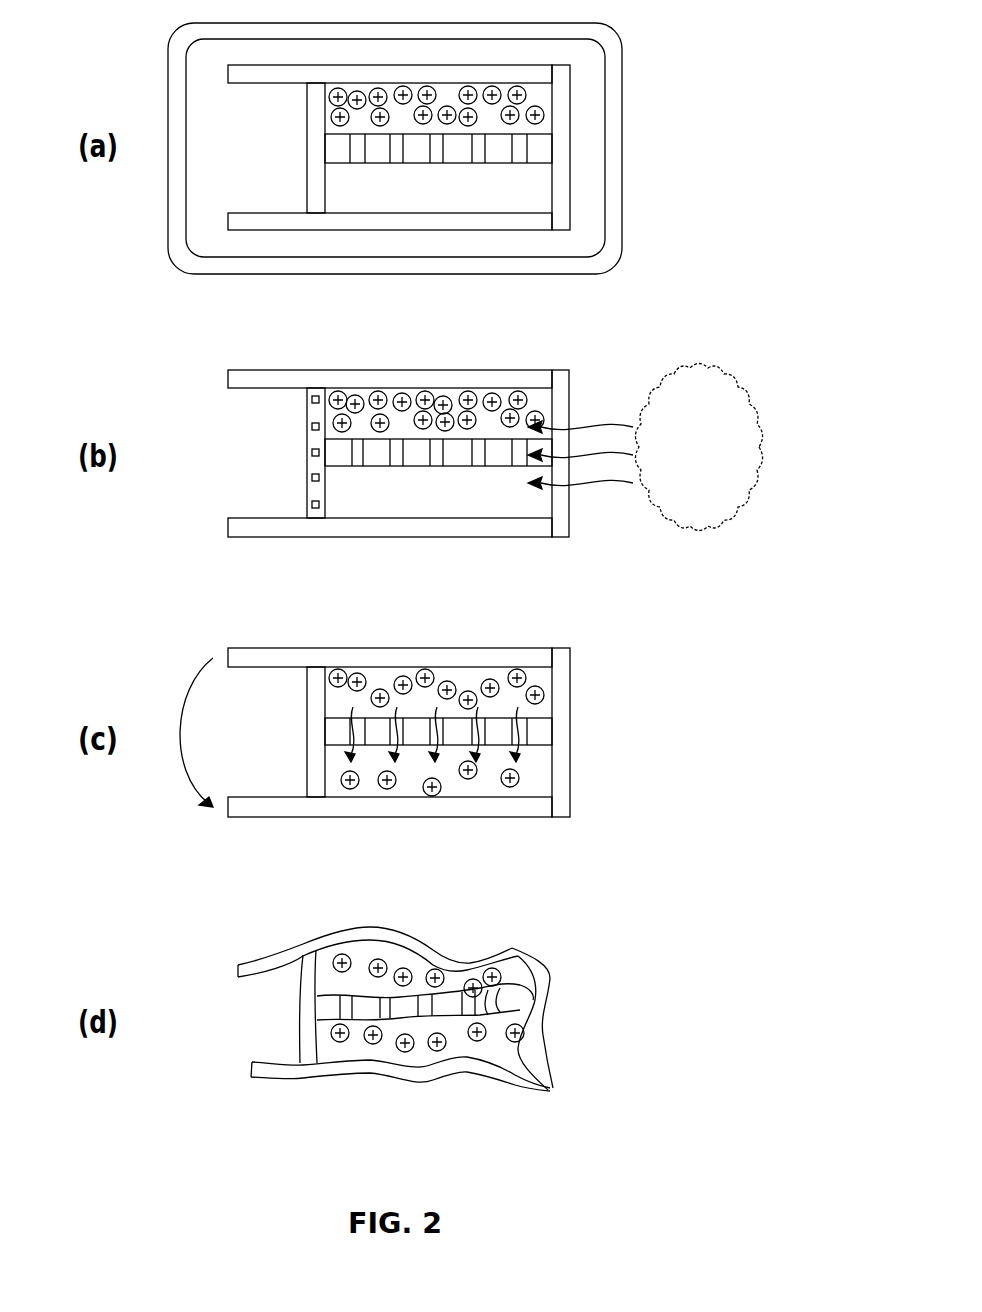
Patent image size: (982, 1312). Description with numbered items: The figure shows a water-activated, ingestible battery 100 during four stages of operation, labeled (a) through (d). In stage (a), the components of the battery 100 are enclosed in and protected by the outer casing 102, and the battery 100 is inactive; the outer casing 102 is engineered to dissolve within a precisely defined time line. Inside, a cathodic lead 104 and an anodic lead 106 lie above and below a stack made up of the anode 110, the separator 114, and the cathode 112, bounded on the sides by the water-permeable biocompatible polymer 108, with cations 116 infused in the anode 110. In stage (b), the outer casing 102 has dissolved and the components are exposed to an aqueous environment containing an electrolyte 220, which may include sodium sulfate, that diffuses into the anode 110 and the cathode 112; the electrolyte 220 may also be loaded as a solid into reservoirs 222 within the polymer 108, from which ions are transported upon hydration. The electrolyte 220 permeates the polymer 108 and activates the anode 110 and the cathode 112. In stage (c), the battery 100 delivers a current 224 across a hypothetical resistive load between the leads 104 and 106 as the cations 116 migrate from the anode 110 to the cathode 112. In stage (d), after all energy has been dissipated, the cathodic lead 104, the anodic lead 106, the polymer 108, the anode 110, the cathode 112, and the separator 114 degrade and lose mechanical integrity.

The water-activated, ingestible battery 100 is at (145, 80).
The outer casing 102 is at (613, 74).
The cathodic lead 104 is at (255, 660).
The anodic lead 106 is at (255, 807).
The water-permeable biocompatible polymer 108 is at (315, 438).
The anode 110 is at (445, 395).
The cathode 112 is at (447, 510).
The separator 114 is at (320, 1008).
The cations 116 is at (522, 672).
The electrolyte 220 is at (657, 402).
The reservoirs 222 is at (315, 478).
The current 224 is at (188, 686).